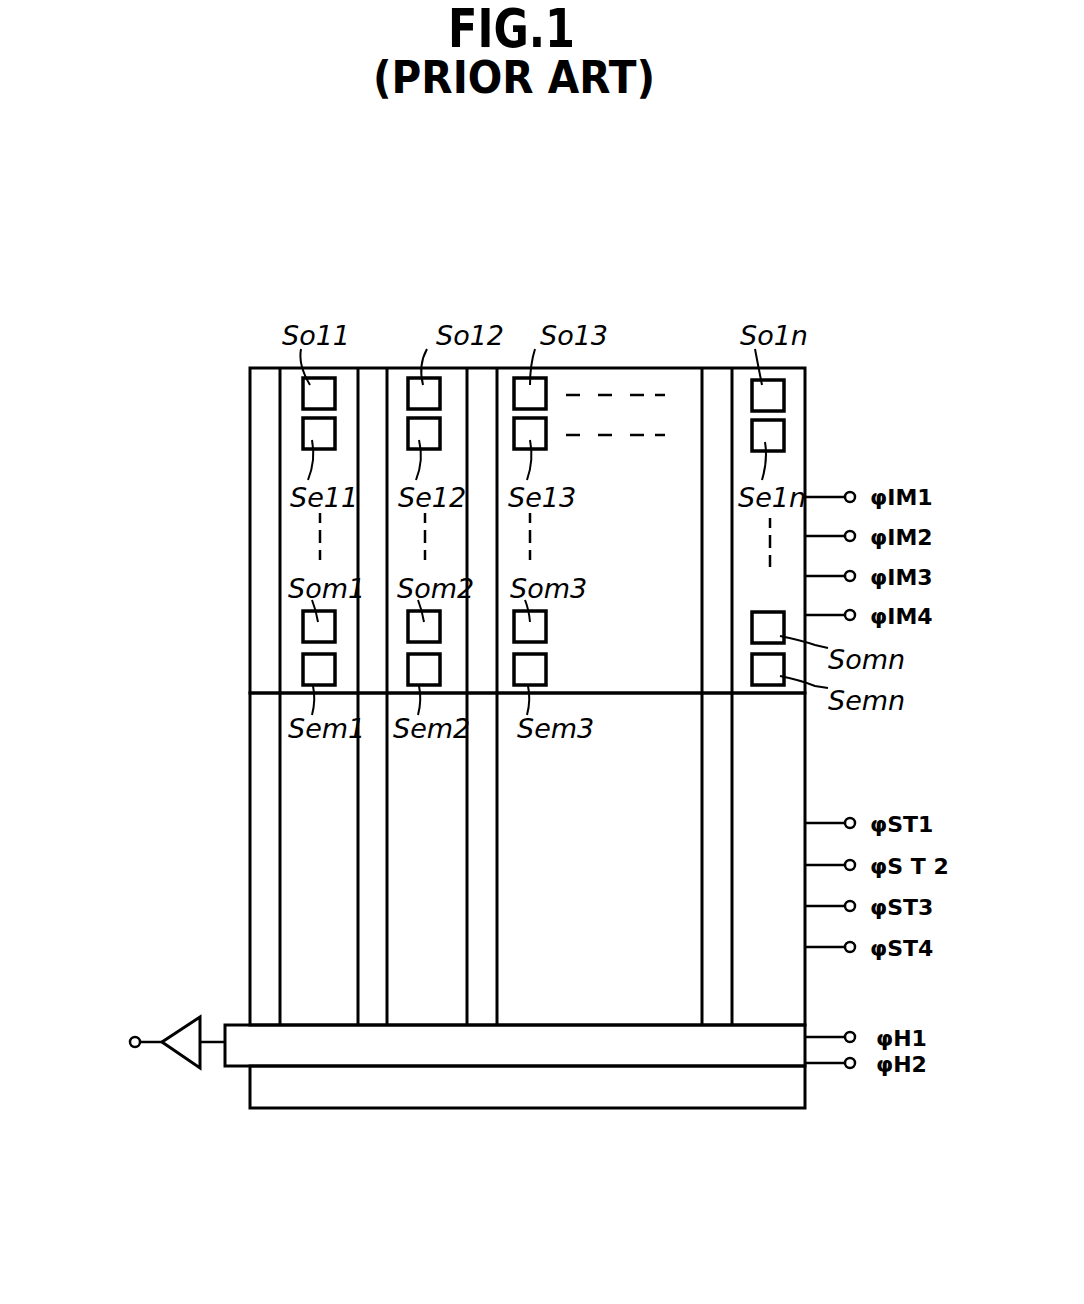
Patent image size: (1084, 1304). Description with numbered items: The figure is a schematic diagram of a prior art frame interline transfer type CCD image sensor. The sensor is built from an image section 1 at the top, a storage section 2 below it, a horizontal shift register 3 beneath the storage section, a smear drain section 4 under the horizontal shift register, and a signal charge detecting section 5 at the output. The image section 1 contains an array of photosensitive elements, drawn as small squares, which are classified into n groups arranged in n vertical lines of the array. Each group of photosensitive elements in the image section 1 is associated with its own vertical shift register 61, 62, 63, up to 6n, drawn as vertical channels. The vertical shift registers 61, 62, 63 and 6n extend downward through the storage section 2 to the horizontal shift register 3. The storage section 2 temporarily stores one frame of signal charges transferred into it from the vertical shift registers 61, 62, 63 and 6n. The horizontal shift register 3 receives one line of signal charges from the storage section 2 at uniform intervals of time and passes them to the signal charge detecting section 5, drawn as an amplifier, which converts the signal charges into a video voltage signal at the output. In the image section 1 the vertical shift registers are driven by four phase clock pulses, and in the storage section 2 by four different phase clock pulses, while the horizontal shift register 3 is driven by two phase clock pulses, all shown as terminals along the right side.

The image section 1 is at (795, 390).
The storage section 2 is at (795, 745).
The horizontal shift register 3 is at (765, 1040).
The smear drain section 4 is at (798, 1092).
The signal charge detecting section 5 is at (188, 1070).
The vertical shift register 61 is at (268, 811).
The vertical shift register 62 is at (378, 811).
The vertical shift register 63 is at (486, 813).
The vertical shift register 6n is at (722, 777).